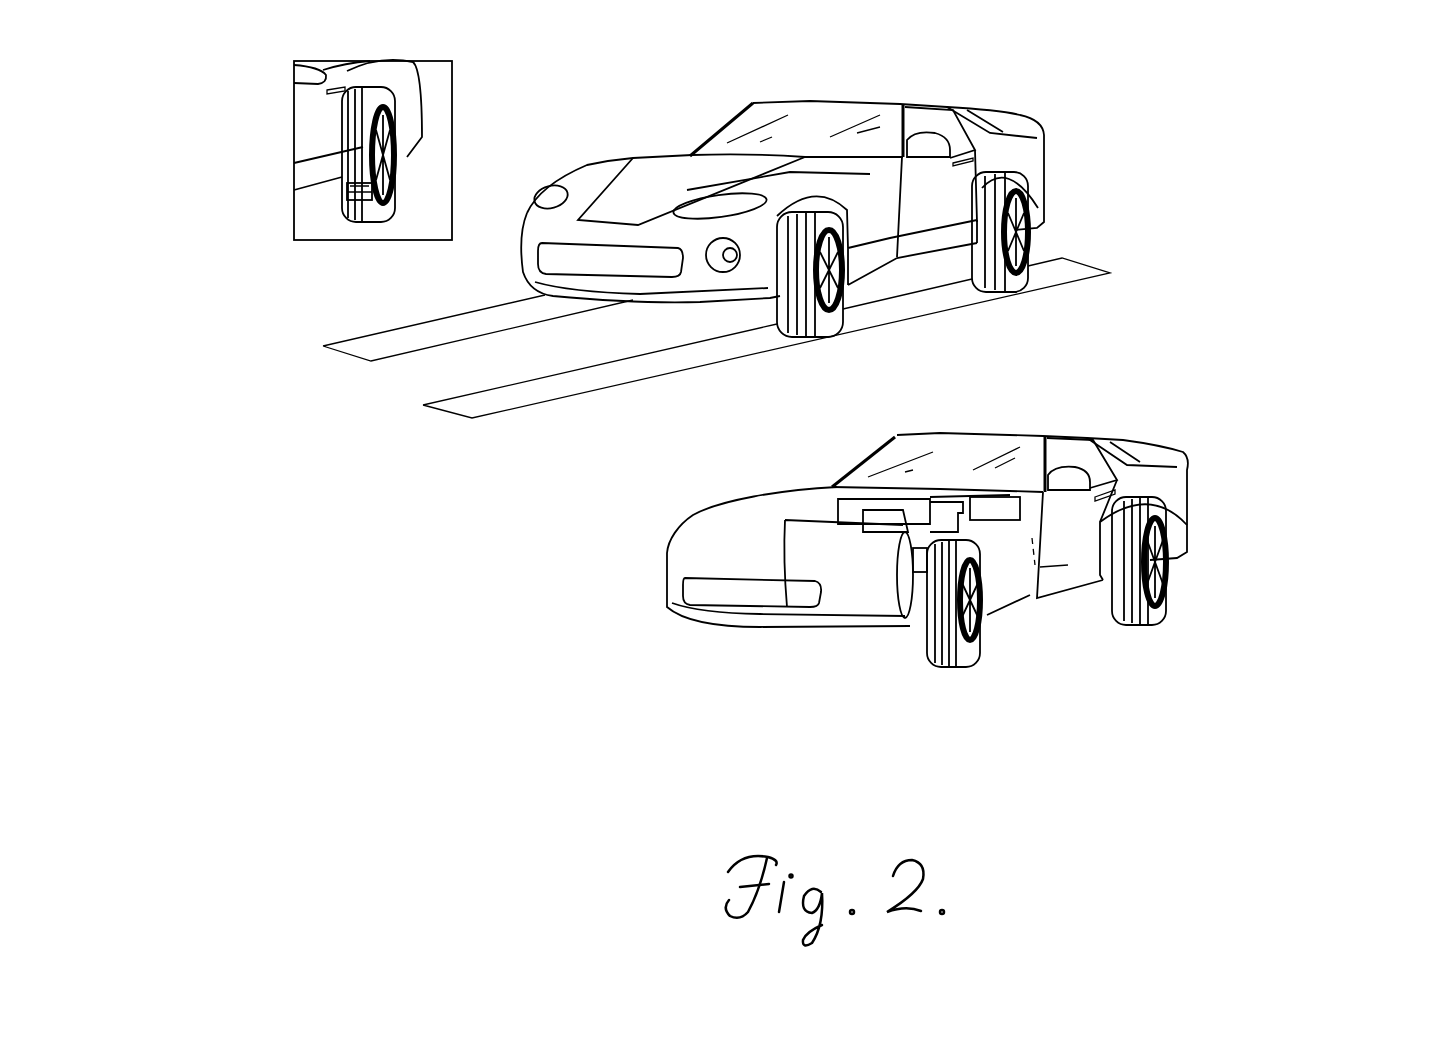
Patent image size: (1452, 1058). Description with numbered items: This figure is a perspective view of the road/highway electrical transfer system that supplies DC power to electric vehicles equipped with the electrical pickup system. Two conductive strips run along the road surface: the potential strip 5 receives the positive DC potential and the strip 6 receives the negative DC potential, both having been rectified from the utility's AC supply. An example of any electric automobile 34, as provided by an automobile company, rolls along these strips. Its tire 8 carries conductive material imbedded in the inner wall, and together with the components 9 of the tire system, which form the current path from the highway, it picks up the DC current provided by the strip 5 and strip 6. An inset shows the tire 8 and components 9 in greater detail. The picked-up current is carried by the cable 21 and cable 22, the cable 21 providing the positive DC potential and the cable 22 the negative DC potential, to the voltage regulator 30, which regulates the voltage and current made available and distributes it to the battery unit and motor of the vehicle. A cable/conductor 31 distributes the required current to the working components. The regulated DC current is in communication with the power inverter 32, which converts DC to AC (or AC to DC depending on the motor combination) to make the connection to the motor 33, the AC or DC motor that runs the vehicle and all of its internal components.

The potential strip 5 is at (829, 338).
The strip 6 is at (420, 424).
The tire 8 is at (727, 419).
The current path components 9 is at (461, 138).
The cable 21 is at (927, 555).
The cable 22 is at (815, 464).
The voltage regulator 30 is at (1192, 613).
The cable/conductor 31 is at (891, 449).
The power inverter 32 is at (691, 615).
The motor 33 is at (797, 627).
The electric automobile 34 is at (816, 170).